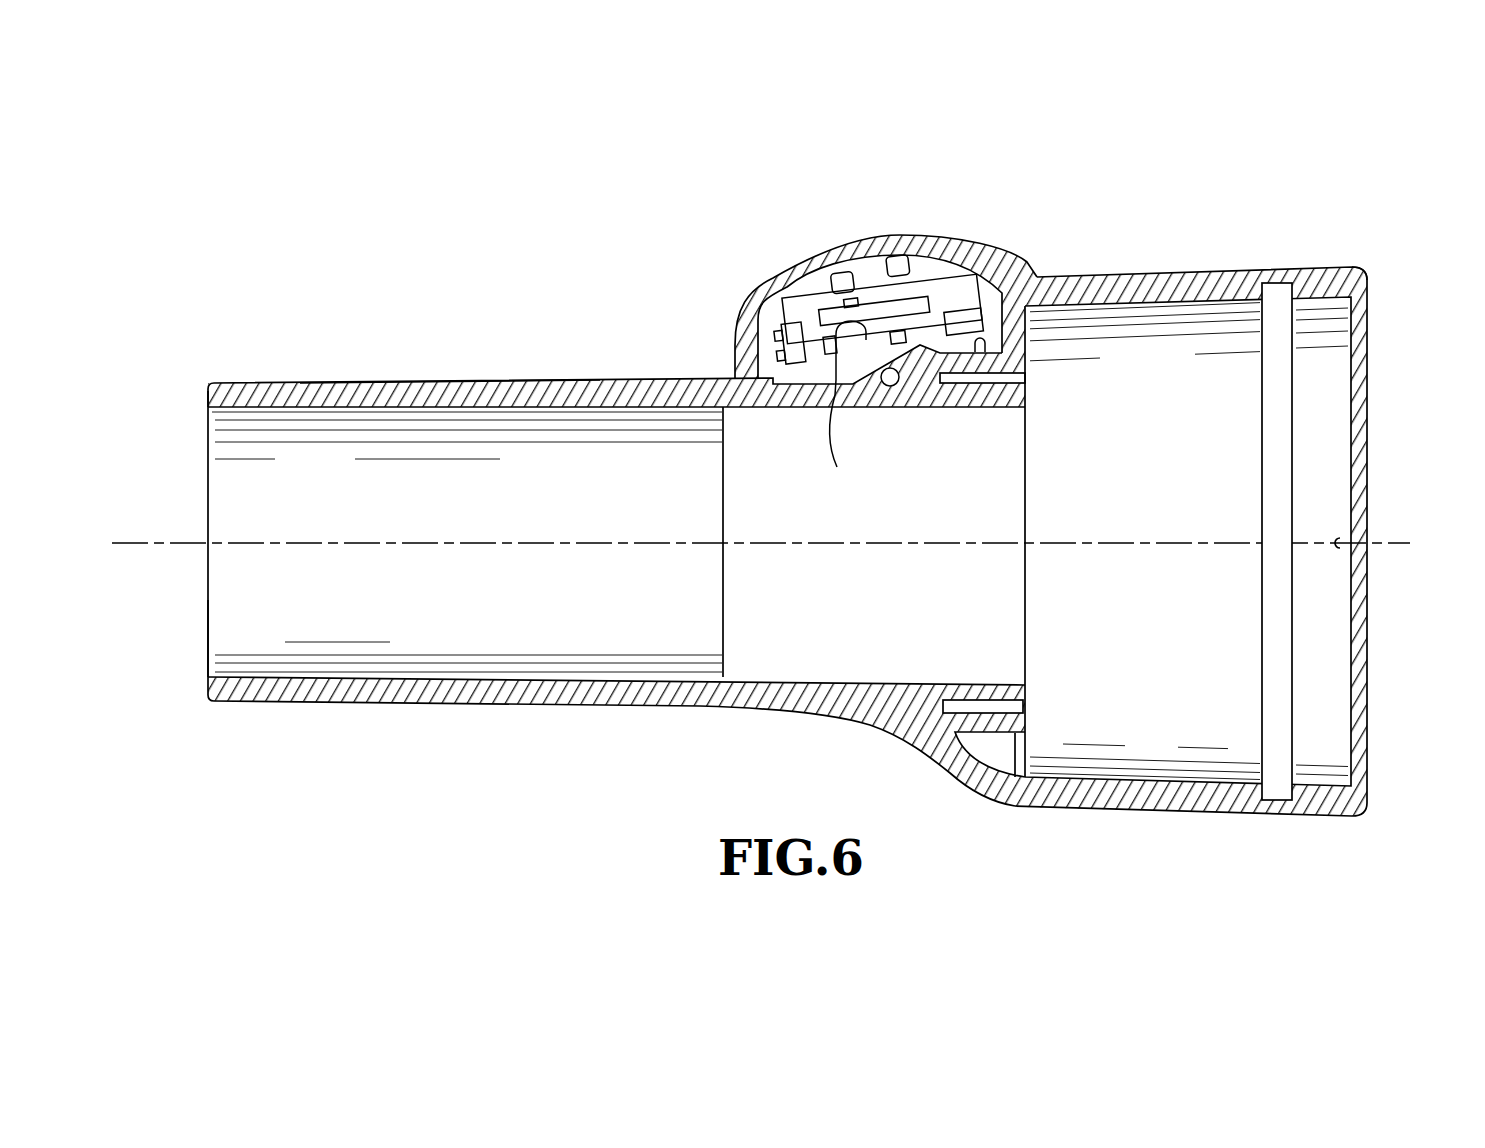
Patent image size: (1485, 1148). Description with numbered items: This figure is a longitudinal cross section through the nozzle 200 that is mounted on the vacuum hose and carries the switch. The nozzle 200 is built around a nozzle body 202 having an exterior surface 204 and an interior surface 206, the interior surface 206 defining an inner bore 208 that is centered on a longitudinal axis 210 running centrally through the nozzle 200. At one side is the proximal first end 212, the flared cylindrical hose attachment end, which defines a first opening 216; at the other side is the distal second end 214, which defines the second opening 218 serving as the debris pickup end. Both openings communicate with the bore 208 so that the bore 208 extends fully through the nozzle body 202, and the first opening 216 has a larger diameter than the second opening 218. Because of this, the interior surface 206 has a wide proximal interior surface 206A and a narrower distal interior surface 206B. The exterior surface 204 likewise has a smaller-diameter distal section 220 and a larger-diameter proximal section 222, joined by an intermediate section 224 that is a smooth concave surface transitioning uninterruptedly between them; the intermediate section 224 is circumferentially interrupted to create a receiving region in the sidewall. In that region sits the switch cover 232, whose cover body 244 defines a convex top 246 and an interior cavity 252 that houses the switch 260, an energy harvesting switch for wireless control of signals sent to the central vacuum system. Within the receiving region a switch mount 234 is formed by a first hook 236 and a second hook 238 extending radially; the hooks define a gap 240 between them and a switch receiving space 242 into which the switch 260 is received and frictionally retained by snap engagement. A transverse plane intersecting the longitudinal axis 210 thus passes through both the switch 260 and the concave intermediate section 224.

The nozzle 200 is at (569, 554).
The nozzle body 202 is at (616, 575).
The exterior surface 204 is at (383, 377).
The interior surface 206 is at (875, 541).
The proximal interior surface 206A is at (1188, 541).
The distal interior surface 206B is at (561, 542).
The inner bore 208 is at (1133, 542).
The longitudinal axis 210 is at (183, 541).
The proximal first end 212 is at (1367, 280).
The distal second end 214 is at (208, 398).
The first opening 216 is at (1333, 698).
The second opening 218 is at (218, 628).
The distal section 220 is at (447, 705).
The proximal section 222 is at (1227, 818).
The intermediate section 224 is at (925, 750).
The switch cover 232 is at (812, 301).
The switch mount 234 is at (839, 219).
The first hook 236 is at (893, 262).
The second hook 238 is at (835, 260).
The gap 240 is at (877, 270).
The switch receiving space 242 is at (839, 406).
The cover body 244 is at (833, 281).
The convex top 246 is at (917, 236).
The interior cavity 252 is at (770, 338).
The switch 260 is at (833, 281).